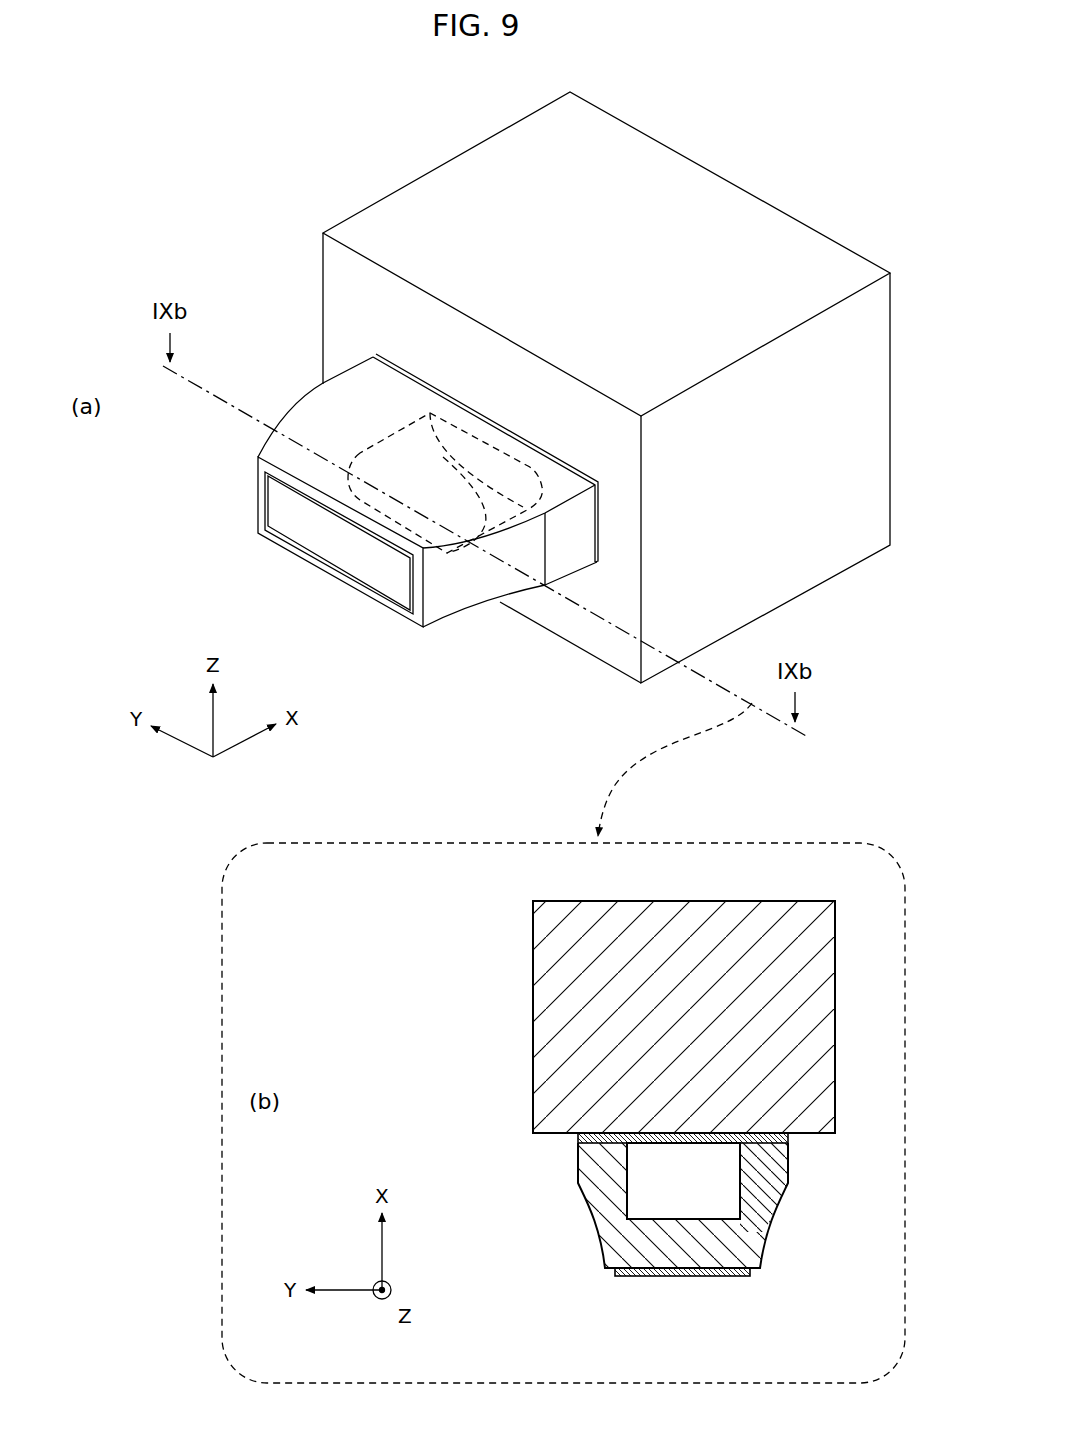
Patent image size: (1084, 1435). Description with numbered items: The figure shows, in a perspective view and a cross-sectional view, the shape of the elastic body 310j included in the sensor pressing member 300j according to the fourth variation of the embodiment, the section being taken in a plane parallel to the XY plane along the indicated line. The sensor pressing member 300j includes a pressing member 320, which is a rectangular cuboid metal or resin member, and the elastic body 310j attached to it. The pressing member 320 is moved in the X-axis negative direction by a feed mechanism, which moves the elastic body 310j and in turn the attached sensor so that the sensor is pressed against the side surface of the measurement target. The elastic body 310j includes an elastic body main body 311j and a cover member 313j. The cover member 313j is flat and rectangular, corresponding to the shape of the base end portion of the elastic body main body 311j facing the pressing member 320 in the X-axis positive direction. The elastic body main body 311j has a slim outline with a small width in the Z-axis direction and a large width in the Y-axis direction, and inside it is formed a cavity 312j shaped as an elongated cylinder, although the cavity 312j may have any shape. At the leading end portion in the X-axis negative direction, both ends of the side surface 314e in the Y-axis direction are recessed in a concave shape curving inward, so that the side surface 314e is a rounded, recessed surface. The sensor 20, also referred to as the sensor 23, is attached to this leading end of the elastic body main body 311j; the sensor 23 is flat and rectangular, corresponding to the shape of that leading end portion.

The sensor pressing member 300j is at (289, 148).
The pressing member 320 is at (460, 175).
The elastic body 310j is at (347, 370).
The elastic body main body 311j is at (257, 493).
The cavity 312j is at (397, 437).
The cover member 313j is at (598, 530).
The side surface 314e is at (482, 587).
The sensor 20 is at (419, 891).
The sensor 23 is at (327, 547).